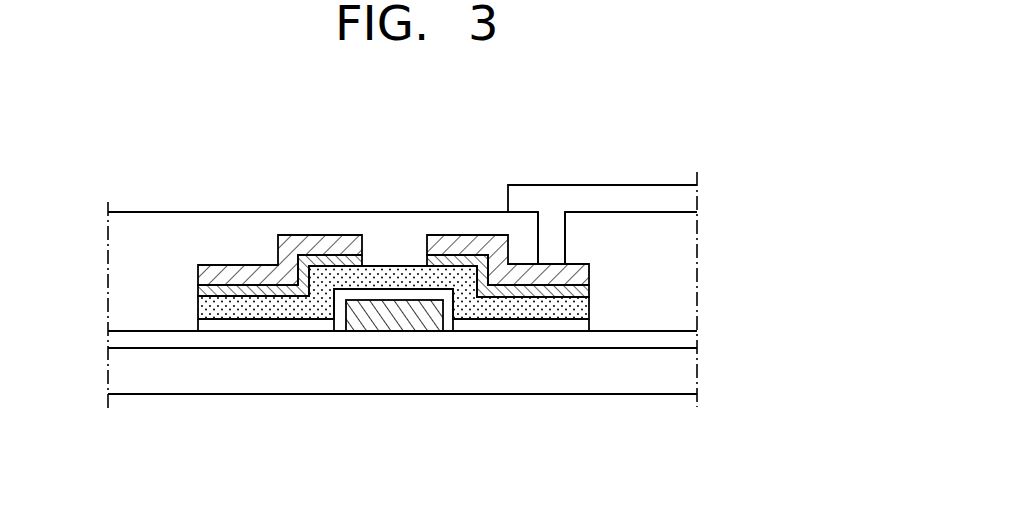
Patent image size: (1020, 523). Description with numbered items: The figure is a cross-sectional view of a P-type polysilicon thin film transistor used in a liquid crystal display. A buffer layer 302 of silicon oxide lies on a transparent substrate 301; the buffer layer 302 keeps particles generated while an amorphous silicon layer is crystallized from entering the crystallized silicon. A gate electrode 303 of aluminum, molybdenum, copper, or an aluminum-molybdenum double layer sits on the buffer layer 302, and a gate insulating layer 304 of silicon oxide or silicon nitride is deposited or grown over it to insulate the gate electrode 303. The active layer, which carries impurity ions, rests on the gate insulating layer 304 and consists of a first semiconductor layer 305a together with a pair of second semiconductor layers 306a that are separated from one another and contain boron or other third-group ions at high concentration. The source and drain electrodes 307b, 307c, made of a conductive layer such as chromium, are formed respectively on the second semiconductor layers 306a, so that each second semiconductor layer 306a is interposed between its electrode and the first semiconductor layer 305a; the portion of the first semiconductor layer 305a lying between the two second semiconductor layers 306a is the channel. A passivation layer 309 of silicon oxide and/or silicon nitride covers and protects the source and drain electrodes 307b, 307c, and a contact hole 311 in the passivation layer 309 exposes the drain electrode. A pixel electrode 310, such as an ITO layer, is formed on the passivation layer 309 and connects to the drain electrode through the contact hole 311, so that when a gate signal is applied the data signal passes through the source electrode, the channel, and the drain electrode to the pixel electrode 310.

The transparent substrate 301 is at (688, 372).
The buffer layer 302 is at (688, 337).
The gate electrode 303 is at (397, 323).
The gate insulating layer 304 is at (468, 327).
The first semiconductor layer 305a is at (518, 318).
The second semiconductor layers 306a is at (572, 312).
The source electrode 307b is at (327, 235).
The drain electrode 307c is at (455, 235).
The passivation layer 309 is at (688, 244).
The pixel electrode 310 is at (688, 201).
The contact hole 311 is at (553, 233).